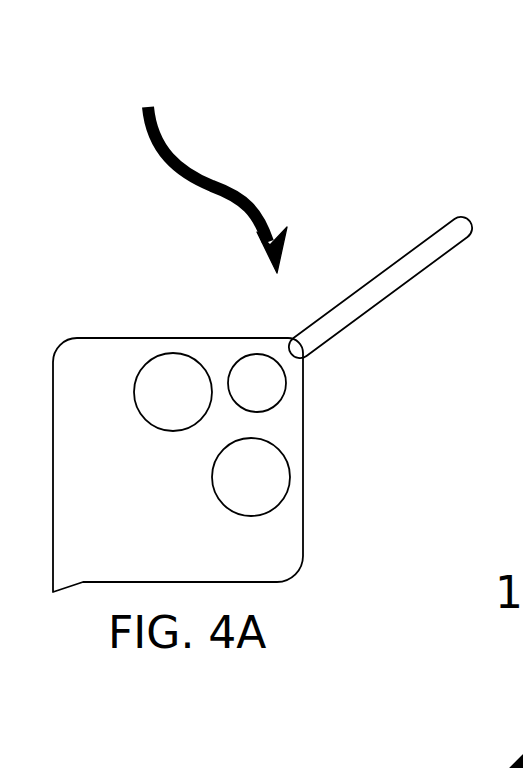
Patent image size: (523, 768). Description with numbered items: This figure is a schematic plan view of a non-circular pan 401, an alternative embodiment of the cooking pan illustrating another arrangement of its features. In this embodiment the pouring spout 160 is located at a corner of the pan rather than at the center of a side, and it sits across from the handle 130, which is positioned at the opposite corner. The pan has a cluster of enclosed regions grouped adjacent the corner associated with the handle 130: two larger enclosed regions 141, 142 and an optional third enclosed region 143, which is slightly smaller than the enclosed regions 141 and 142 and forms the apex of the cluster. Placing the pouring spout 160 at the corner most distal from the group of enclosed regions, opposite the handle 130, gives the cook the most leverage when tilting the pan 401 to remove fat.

The non-circular pan 401 is at (180, 147).
The handle 130 is at (388, 247).
The enclosed region 141 is at (272, 502).
The enclosed region 142 is at (172, 354).
The third enclosed region 143 is at (287, 395).
The pouring spout 160 is at (62, 598).